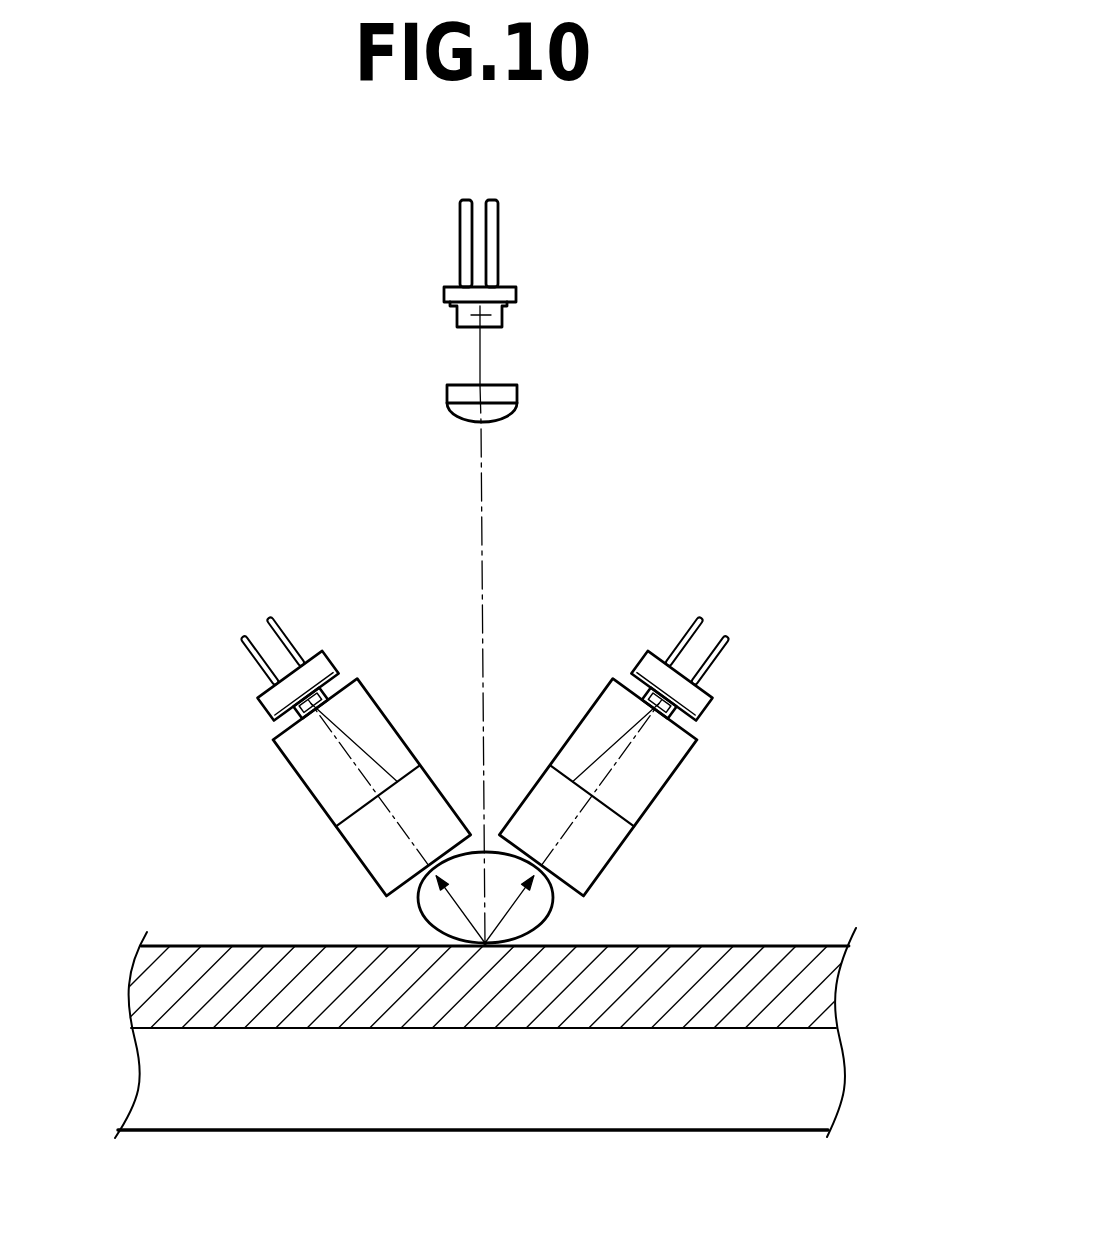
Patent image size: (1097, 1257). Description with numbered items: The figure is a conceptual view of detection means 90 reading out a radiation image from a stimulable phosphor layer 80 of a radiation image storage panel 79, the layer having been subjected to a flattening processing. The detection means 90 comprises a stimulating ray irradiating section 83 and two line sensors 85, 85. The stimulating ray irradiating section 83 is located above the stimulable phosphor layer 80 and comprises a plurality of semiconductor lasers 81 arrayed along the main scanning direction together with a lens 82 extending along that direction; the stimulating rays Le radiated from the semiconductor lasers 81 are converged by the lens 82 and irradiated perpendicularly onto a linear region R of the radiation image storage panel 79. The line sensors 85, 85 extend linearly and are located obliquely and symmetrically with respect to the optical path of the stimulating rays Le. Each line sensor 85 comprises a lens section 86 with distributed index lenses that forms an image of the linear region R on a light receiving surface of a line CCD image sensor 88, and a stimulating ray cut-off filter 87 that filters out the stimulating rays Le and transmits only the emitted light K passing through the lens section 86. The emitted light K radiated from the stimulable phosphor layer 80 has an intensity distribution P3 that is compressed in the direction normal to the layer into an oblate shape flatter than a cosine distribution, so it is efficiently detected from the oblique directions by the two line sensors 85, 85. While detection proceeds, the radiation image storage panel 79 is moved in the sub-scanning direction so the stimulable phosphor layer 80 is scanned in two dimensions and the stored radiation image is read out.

The radiation image storage panel 79 is at (126, 1046).
The stimulable phosphor layer 80 is at (207, 948).
The semiconductor laser 81 is at (513, 294).
The lens 82 is at (508, 394).
The stimulating ray irradiating section 83 is at (597, 252).
The line sensor 85 is at (420, 577).
The lens section 86 is at (434, 788).
The stimulating ray cut-off filter 87 is at (393, 716).
The line CCD image sensor 88 is at (336, 650).
The detection means 90 is at (750, 334).
The stimulating rays Le is at (487, 507).
The intensity distribution P3 is at (562, 903).
The linear region R is at (484, 942).
The emitted light K is at (486, 943).